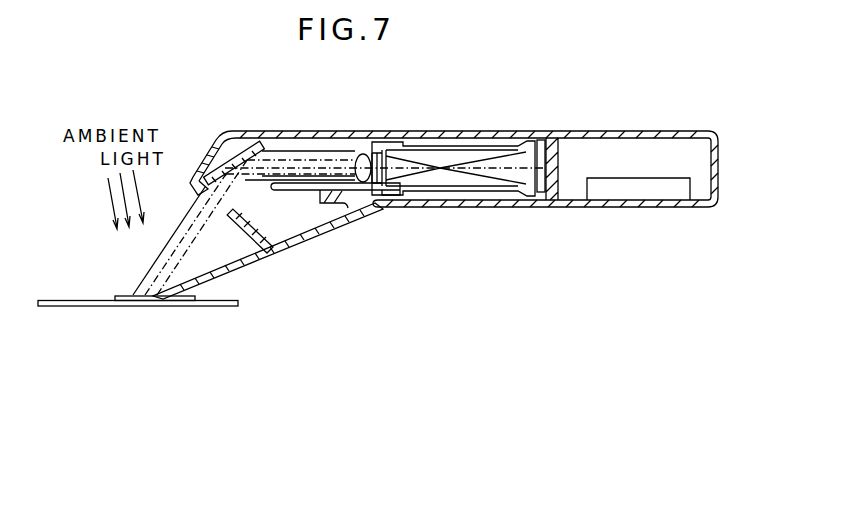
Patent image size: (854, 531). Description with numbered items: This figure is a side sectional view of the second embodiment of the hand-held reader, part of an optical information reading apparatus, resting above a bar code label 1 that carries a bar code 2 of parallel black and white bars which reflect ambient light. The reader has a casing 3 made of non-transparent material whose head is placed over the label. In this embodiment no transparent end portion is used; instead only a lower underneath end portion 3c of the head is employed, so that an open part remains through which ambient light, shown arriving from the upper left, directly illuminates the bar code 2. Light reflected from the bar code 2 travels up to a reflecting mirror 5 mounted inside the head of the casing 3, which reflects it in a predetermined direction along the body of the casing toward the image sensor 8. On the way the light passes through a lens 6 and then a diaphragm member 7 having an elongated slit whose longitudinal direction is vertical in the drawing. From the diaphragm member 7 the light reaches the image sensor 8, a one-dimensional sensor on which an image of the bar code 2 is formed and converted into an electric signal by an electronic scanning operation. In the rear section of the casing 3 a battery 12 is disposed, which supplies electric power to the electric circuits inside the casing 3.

The bar code label 1 is at (73, 307).
The bar code 2 is at (119, 295).
The casing 3 is at (428, 125).
The lower underneath end portion 3c is at (233, 277).
The reflecting mirror 5 is at (227, 137).
The lens 6 is at (364, 152).
The diaphragm member 7 is at (385, 198).
The image sensor 8 is at (541, 146).
The battery 12 is at (612, 190).